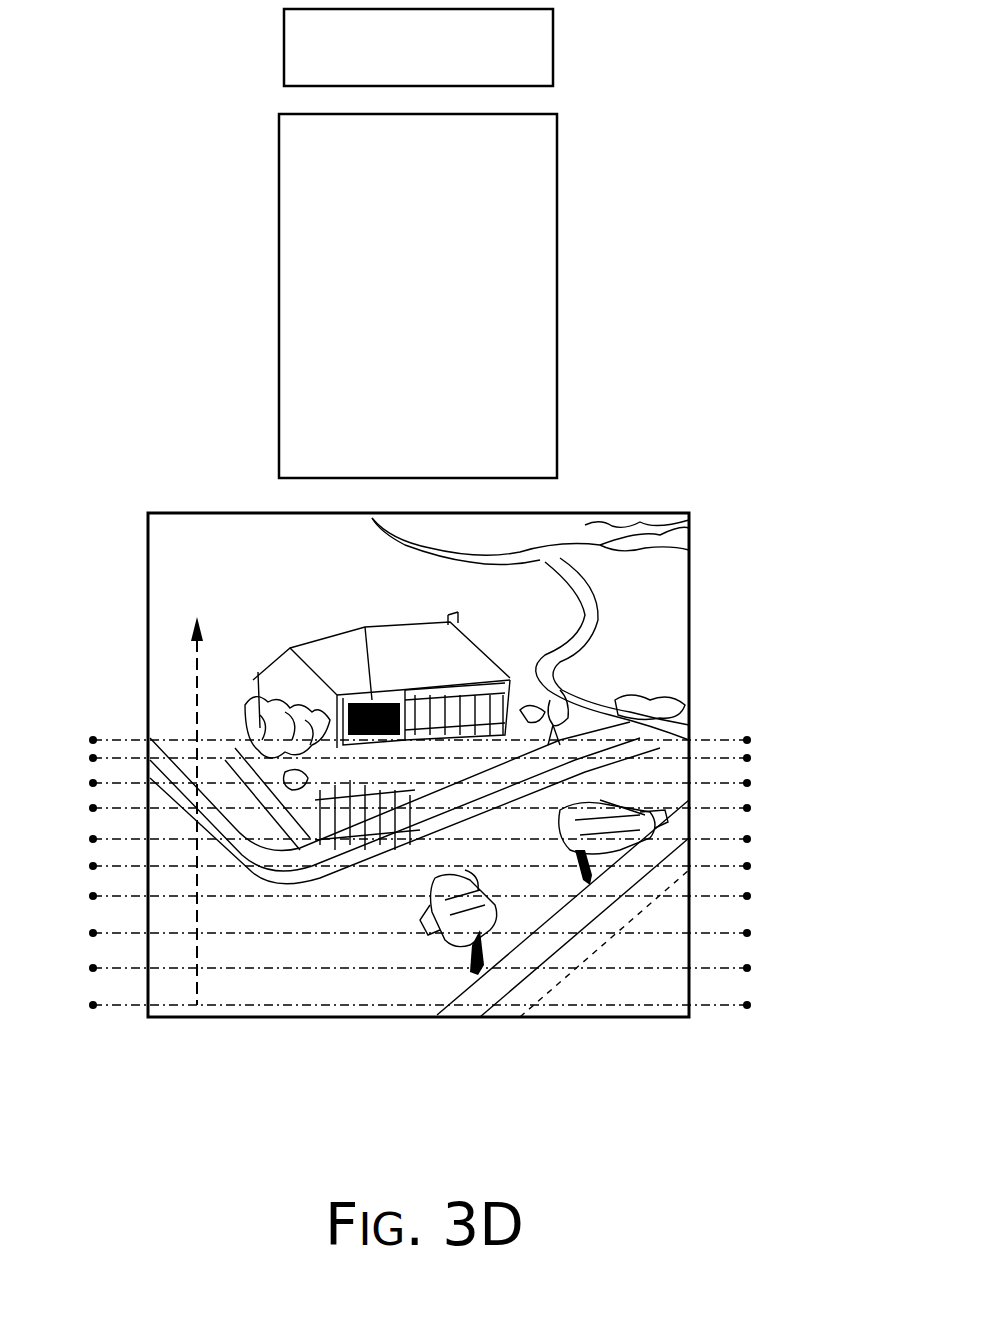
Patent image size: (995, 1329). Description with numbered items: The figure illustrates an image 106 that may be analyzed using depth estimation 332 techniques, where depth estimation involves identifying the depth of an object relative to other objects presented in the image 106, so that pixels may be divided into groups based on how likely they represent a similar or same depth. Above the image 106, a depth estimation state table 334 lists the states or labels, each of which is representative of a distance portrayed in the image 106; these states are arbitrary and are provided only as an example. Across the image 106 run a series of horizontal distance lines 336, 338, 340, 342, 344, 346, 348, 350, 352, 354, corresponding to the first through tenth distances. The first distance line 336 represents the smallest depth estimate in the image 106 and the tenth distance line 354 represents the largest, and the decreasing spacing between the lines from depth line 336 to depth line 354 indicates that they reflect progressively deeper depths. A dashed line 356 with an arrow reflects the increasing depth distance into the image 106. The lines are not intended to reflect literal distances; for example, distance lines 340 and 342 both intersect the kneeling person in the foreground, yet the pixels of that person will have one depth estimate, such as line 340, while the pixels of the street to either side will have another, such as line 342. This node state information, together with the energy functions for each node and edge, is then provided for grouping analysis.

The depth estimation 332 is at (418, 47).
The depth estimation state table 334 is at (557, 114).
The image 106 is at (148, 513).
The dashed line 356 is at (193, 665).
The distance 1 336 is at (747, 1005).
The distance 2 338 is at (747, 968).
The distance 3 340 is at (747, 933).
The distance 4 342 is at (747, 896).
The distance 5 344 is at (747, 866).
The distance 6 346 is at (747, 839).
The distance 7 348 is at (747, 808).
The distance 8 350 is at (747, 783).
The distance 9 352 is at (747, 758).
The distance 10 354 is at (747, 740).